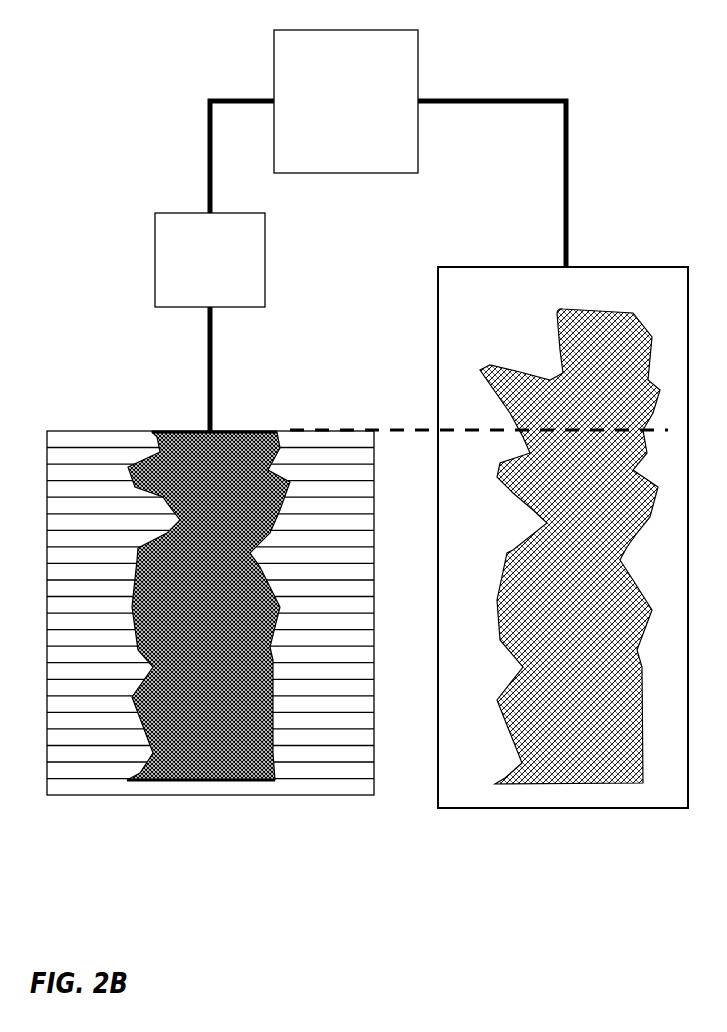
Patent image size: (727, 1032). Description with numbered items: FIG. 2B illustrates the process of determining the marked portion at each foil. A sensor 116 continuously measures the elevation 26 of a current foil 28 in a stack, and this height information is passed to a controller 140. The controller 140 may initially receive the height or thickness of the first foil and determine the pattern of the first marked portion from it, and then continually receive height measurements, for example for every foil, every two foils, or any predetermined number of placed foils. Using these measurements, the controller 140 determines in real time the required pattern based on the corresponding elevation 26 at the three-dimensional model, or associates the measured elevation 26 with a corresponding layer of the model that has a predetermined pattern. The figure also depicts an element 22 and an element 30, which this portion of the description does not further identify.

The controller 140 is at (418, 64).
The sensor 116 is at (177, 212).
The container 22 is at (633, 266).
The elevation 26 is at (465, 427).
The current foil 28 is at (46, 440).
The object in bath 30 is at (187, 812).